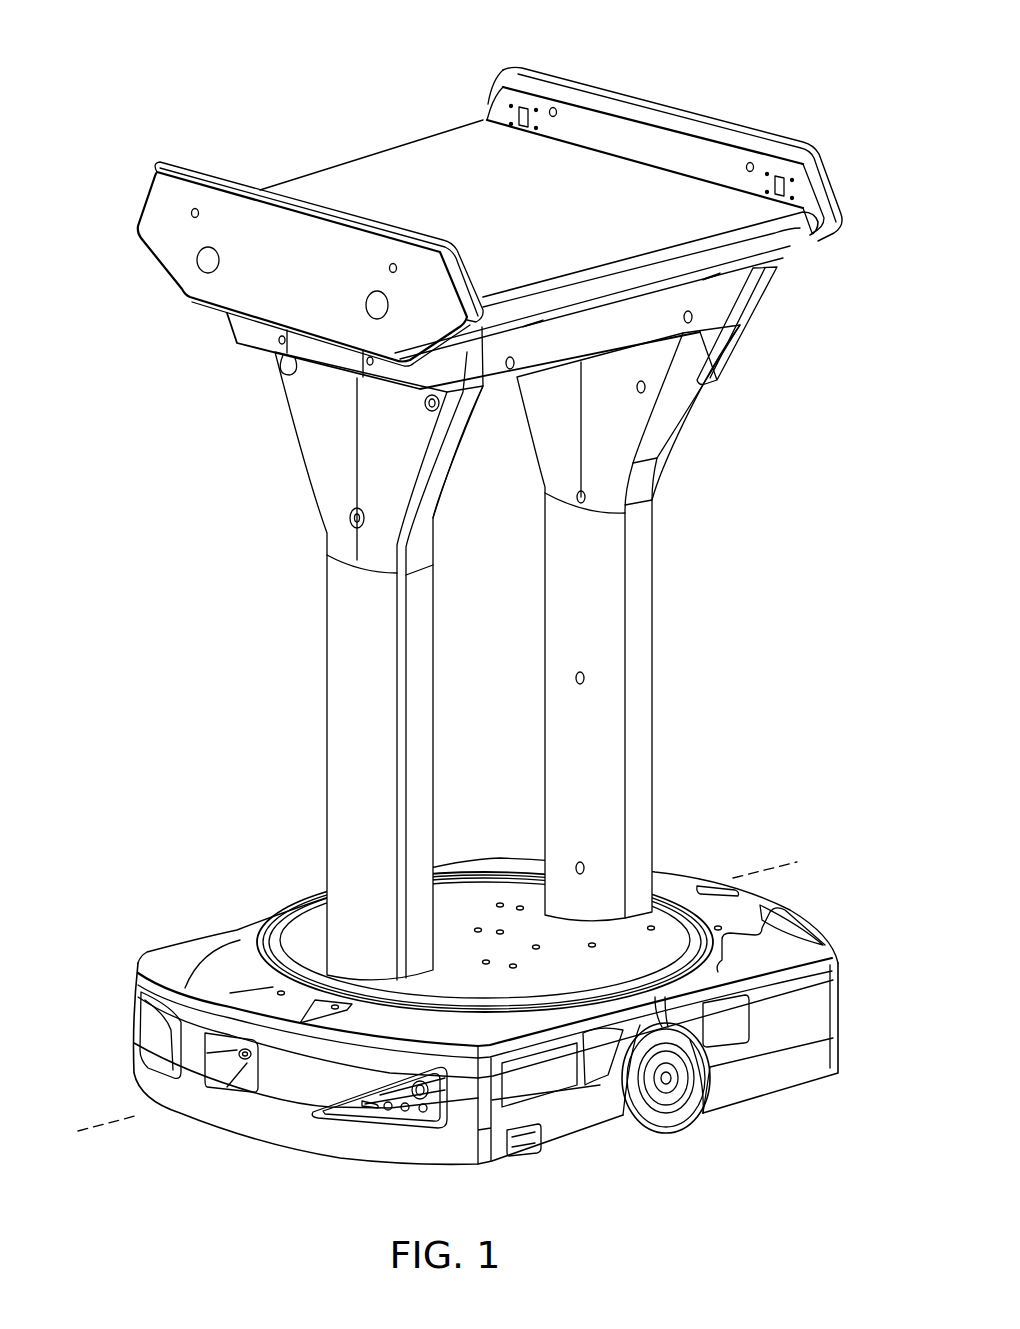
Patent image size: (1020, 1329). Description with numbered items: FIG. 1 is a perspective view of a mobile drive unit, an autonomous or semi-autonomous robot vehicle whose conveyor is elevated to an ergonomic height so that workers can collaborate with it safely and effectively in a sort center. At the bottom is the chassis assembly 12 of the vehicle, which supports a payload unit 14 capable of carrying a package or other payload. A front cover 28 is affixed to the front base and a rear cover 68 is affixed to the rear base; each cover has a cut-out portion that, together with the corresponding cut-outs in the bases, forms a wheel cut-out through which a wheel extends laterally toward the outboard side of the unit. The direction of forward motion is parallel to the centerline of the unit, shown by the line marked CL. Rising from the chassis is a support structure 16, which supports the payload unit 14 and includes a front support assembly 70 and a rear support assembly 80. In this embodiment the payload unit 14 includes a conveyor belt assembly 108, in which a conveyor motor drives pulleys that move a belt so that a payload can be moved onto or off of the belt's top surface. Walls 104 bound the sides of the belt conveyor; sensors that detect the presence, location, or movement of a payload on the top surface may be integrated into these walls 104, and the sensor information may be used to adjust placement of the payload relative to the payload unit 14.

The chassis assembly 12 is at (474, 1014).
The payload unit 14 is at (503, 211).
The support structure 16 is at (417, 652).
The front cover 28 is at (489, 1132).
The rear cover 68 is at (683, 888).
The front support assembly 70 is at (645, 588).
The rear support assembly 80 is at (374, 653).
The walls 104 is at (218, 185).
The conveyor belt assembly 108 is at (384, 158).